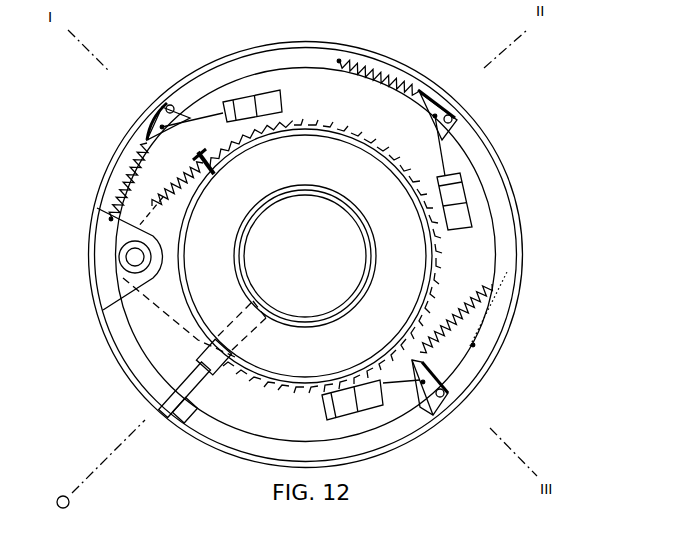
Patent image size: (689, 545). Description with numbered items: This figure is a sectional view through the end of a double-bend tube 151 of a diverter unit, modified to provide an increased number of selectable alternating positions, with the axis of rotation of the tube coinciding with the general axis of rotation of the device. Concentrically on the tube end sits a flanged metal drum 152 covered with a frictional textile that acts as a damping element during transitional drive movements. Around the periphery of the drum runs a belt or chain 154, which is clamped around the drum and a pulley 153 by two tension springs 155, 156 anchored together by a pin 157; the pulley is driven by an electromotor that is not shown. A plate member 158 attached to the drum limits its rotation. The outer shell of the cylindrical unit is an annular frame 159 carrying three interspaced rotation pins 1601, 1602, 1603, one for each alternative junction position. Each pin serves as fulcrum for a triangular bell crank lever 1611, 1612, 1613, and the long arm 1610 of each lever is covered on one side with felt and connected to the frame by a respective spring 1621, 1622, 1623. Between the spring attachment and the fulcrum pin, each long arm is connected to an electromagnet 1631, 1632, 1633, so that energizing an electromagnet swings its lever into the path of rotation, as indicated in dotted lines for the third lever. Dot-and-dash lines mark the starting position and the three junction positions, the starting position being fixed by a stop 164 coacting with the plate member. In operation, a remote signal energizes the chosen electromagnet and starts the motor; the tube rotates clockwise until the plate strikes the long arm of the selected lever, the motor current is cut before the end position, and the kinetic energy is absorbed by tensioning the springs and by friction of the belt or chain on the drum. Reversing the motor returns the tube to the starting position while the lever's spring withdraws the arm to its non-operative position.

The double-bend tube 151 is at (353, 290).
The flanged metal drum 152 is at (295, 363).
The pulley 153 is at (128, 257).
The belt or chain 154 is at (175, 318).
The tension spring 155 is at (182, 178).
The tension spring 156 is at (230, 143).
The pin 157 is at (214, 170).
The plate member 158 is at (195, 363).
The annular frame 159 is at (520, 262).
The rotation pin 1601 is at (165, 102).
The rotation pin 1602 is at (452, 120).
The rotation pin 1603 is at (447, 393).
The bell crank lever 1611 is at (135, 128).
The bell crank lever 1612 is at (422, 93).
The bell crank lever 1613 is at (440, 416).
The long arm 1610 is at (430, 373).
The spring 1621 is at (122, 183).
The spring 1622 is at (367, 82).
The spring 1623 is at (463, 320).
The electromagnet 1631 is at (245, 104).
The electromagnet 1632 is at (458, 197).
The electromagnet 1633 is at (347, 412).
The stop 164 is at (160, 415).